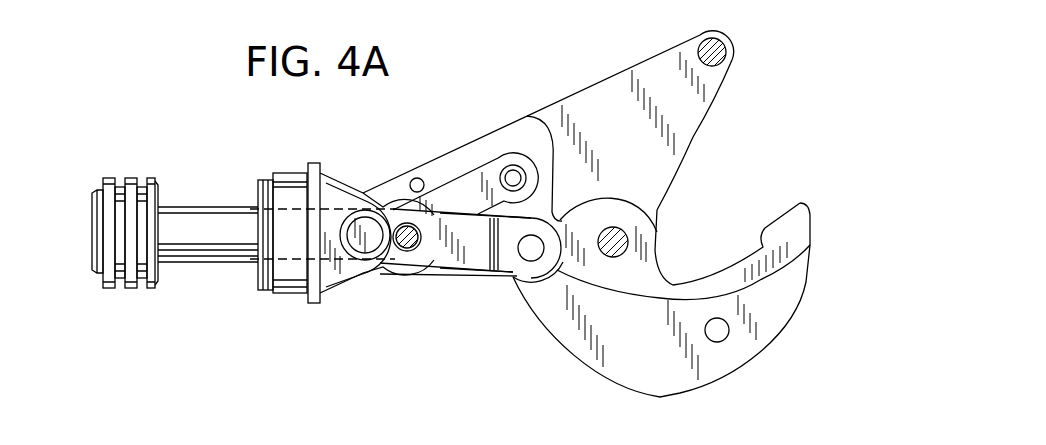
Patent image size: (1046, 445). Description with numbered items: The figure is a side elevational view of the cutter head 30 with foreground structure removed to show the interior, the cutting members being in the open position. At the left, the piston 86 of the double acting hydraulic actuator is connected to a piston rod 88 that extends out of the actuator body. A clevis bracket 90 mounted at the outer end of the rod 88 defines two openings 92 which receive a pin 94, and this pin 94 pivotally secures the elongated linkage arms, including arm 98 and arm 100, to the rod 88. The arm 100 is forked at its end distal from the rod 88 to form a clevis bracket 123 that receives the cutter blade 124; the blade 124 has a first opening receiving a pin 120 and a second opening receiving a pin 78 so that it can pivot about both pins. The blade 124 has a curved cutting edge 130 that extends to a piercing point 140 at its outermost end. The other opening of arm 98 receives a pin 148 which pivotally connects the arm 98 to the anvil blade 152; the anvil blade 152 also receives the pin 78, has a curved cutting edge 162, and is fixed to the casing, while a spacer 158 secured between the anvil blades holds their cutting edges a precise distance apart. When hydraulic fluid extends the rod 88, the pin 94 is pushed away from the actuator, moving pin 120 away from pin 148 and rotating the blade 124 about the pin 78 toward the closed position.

The cutter head 30 is at (596, 152).
The pin 78 is at (627, 240).
The piston 86 is at (106, 181).
The piston rod 88 is at (222, 215).
The clevis bracket 90 is at (477, 307).
The openings 92 is at (404, 227).
The pin 94 is at (403, 251).
The linkage arm 98 is at (460, 187).
The linkage arm 100 is at (477, 250).
The pin 120 is at (533, 256).
The clevis bracket 123 is at (533, 268).
The cutter blade 124 is at (702, 289).
The cutting edge 130 is at (772, 216).
The piercing point 140 is at (803, 206).
The pin 148 is at (508, 168).
The anvil blade 152 is at (695, 103).
The spacer 158 is at (735, 54).
The cutting edge 162 is at (700, 138).